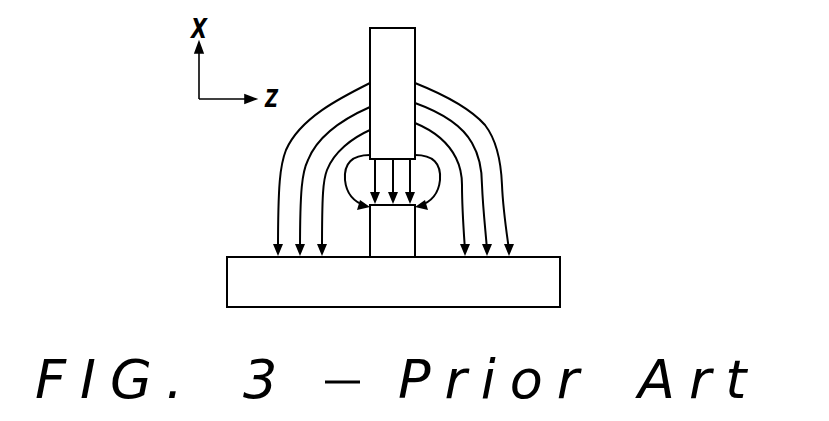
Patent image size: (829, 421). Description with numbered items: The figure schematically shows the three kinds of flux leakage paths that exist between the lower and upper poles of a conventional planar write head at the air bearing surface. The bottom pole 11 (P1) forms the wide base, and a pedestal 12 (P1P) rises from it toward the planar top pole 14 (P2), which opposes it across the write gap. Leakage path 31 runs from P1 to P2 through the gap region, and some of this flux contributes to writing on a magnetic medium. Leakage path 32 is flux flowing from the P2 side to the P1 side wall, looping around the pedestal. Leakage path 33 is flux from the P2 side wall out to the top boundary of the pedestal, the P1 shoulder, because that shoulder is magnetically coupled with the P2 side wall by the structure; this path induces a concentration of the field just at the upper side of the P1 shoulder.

The bottom pole 11 is at (545, 285).
The pedestal 12 is at (395, 247).
The top pole 14 is at (397, 48).
The leakage path 31 is at (417, 168).
The leakage path 32 is at (447, 183).
The leakage path 33 is at (472, 109).